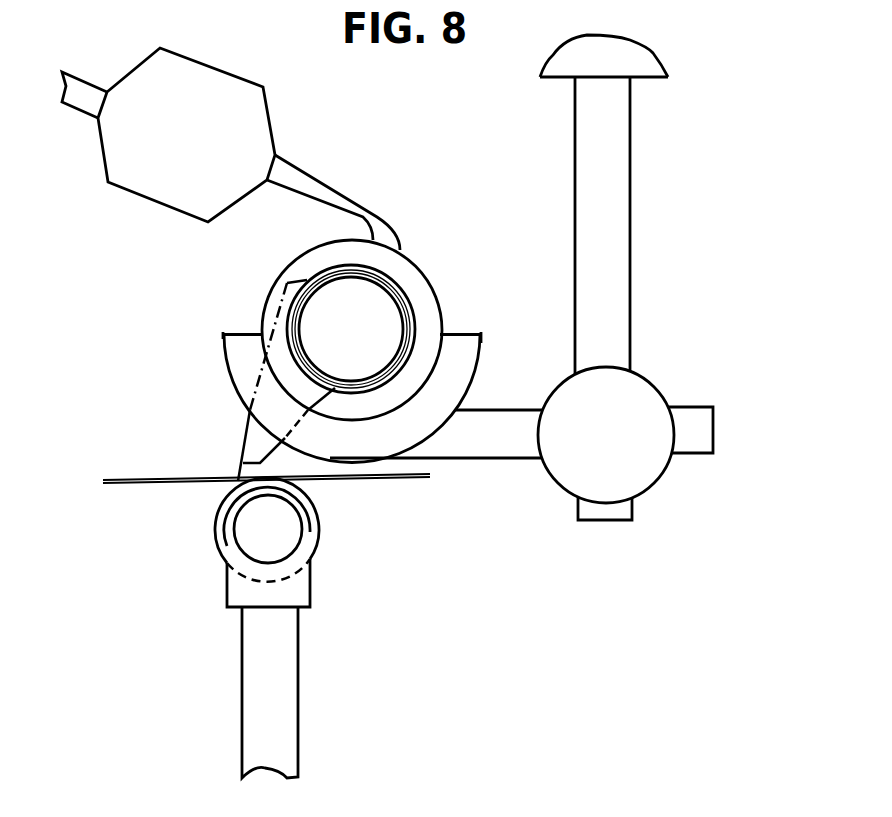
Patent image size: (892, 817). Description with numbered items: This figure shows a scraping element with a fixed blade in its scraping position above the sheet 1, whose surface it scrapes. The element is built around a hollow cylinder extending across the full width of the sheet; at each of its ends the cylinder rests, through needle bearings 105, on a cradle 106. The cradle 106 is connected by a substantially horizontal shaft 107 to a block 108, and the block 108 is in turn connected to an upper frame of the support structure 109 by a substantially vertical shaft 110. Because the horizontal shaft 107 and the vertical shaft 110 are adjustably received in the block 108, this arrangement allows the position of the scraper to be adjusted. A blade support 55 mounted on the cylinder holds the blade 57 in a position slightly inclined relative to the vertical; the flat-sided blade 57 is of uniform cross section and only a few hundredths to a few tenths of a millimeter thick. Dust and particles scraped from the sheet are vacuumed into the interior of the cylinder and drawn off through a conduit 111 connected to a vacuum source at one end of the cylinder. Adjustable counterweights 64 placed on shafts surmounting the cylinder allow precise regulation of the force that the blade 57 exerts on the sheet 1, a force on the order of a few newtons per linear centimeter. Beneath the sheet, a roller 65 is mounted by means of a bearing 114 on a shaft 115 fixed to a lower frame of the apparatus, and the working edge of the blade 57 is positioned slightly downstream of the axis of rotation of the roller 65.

The sheet 1 is at (158, 483).
The blade support 55 is at (262, 425).
The blade 57 is at (242, 440).
The adjustable counterweights 64 is at (153, 177).
The roller 65 is at (313, 527).
The needle bearings 105 is at (418, 303).
The cradle 106 is at (245, 365).
The horizontal shaft 107 is at (498, 447).
The block 108 is at (643, 410).
The upper frame of the support structure 109 is at (617, 62).
The vertical shaft 110 is at (605, 200).
The conduit 111 is at (397, 282).
The bearing 114 is at (295, 560).
The shaft 115 is at (283, 650).